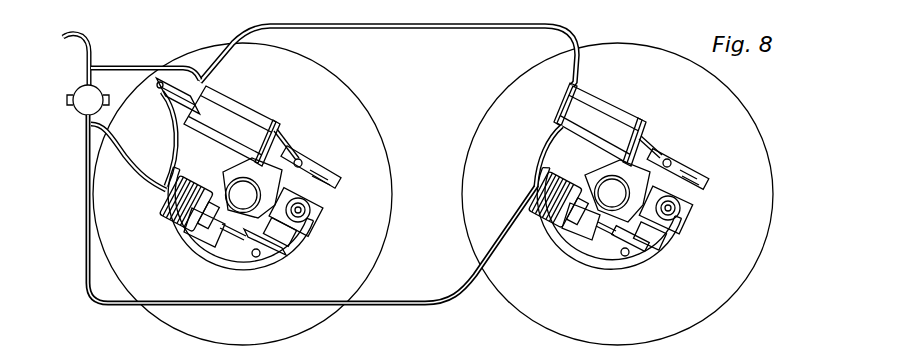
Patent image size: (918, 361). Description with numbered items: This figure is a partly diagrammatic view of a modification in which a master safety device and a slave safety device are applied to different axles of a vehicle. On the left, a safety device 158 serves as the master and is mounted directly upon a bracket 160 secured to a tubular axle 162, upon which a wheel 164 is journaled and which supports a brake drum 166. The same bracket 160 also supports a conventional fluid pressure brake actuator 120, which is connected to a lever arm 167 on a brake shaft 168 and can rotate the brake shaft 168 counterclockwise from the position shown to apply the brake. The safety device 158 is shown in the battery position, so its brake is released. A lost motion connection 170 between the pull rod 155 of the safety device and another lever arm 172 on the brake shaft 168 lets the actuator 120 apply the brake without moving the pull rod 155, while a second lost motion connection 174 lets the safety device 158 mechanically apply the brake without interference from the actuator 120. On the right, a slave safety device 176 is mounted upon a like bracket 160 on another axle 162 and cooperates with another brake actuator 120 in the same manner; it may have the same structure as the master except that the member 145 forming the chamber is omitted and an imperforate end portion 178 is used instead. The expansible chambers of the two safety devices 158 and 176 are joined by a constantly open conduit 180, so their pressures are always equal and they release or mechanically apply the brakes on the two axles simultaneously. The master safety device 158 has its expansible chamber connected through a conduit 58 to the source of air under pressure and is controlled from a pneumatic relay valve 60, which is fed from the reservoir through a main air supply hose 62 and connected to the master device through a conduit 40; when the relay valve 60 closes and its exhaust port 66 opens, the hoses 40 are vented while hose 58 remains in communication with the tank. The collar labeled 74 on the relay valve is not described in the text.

The air supply hose 40 is at (172, 140).
The hose 58 is at (140, 67).
The pneumatic relay valve 60 is at (85, 112).
The main air supply hose 62 is at (88, 42).
The exhaust port 66 is at (106, 94).
The collar 74 is at (68, 94).
The fluid pressure brake actuator 120 is at (185, 232).
The member forming the chamber 145 is at (198, 80).
The pull rod 155 is at (280, 149).
The safety device 158 is at (243, 114).
The bracket 160 is at (280, 143).
The tubular axle 162 is at (224, 250).
The wheel 164 is at (361, 97).
The brake drum 166 is at (318, 222).
The lever arm 167 is at (281, 238).
The brake shaft 168 is at (305, 215).
The lost motion connection 170 is at (322, 170).
The lever arm 172 is at (325, 192).
The lost motion connection 174 is at (275, 249).
The slave safety device 176 is at (620, 118).
The imperforate end portion 178 is at (561, 130).
The constantly open conduit 180 is at (419, 26).